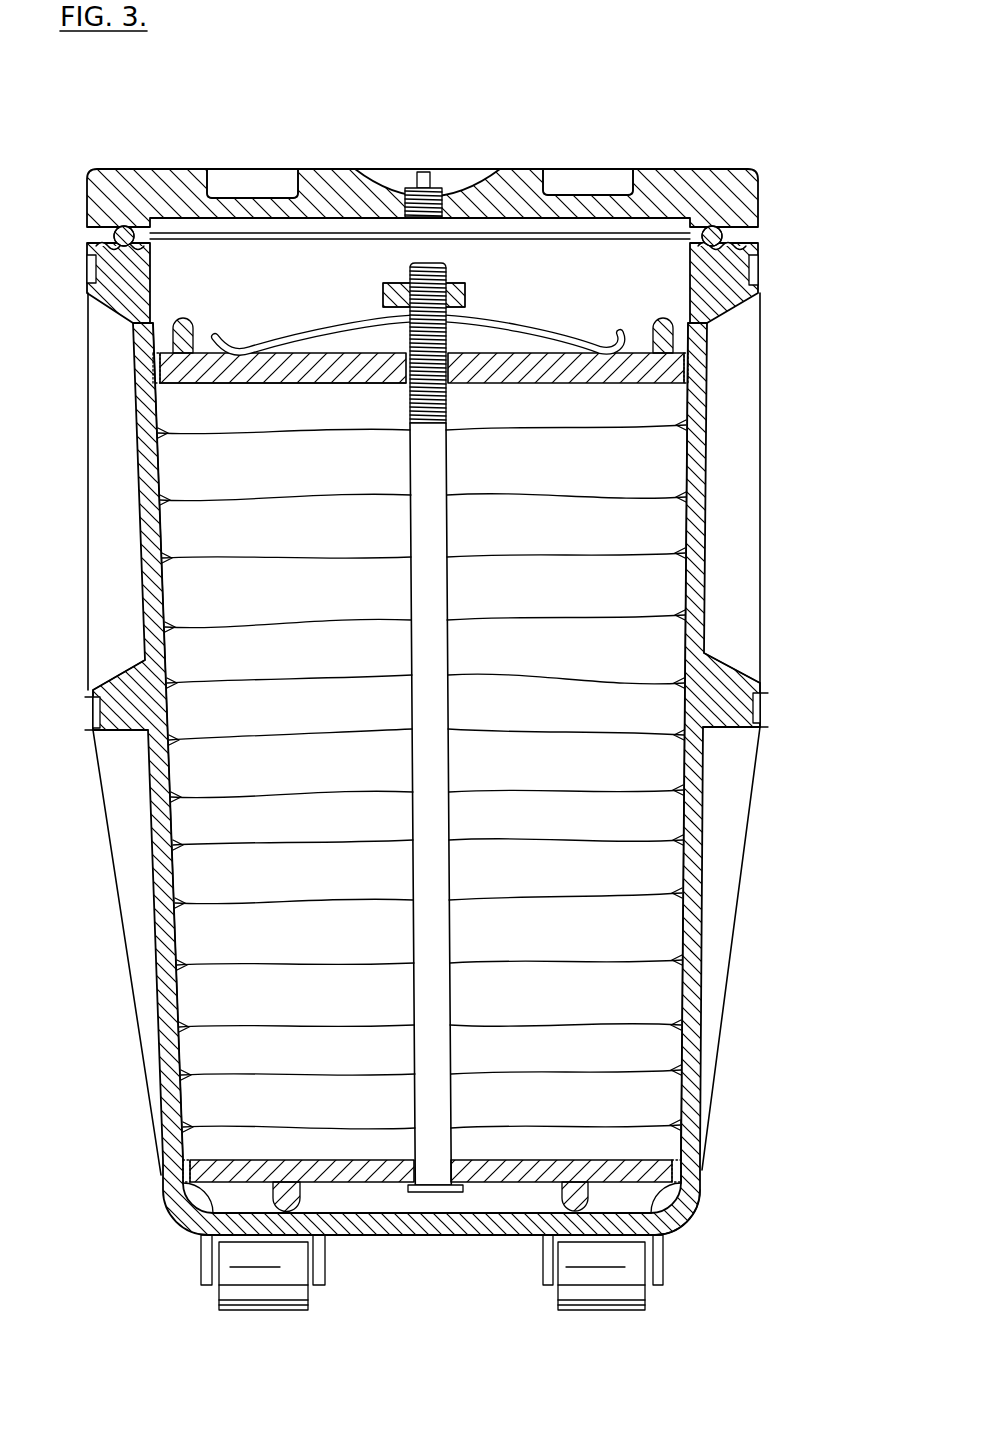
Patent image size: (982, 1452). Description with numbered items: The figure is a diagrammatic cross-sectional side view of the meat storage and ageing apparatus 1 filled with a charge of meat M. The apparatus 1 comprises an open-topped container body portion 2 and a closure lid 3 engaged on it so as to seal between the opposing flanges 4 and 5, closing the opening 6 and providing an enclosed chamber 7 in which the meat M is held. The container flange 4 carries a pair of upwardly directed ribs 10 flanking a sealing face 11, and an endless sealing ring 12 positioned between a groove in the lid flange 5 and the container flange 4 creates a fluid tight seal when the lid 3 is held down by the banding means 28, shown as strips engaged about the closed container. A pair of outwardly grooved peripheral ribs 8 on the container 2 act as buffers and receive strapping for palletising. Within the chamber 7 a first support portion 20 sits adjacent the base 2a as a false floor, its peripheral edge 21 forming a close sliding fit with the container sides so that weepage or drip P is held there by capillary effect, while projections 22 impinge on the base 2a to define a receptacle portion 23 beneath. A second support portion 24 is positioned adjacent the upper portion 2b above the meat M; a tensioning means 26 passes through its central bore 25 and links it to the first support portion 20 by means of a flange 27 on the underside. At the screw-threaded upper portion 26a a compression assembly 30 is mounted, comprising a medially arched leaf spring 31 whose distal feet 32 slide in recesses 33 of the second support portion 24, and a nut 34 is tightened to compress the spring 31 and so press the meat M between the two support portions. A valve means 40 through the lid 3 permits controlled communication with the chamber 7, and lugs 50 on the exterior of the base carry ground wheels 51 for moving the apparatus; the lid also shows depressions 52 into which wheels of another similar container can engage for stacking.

The apparatus 1 is at (775, 162).
The container body portion 2 is at (700, 625).
The base 2a is at (423, 1210).
The upper portion 2b is at (680, 527).
The closure lid 3 is at (312, 170).
The flange 4 is at (745, 297).
The flange 5 is at (760, 203).
The opening 6 is at (645, 275).
The chamber 7 is at (655, 925).
The peripheral ribs 8 is at (110, 300).
The upwardly directed ribs 10 is at (88, 268).
The sealing face 11 is at (98, 242).
The endless sealing ring 12 is at (118, 226).
The first support portion 20 is at (660, 1148).
The peripheral edge 21 is at (670, 1186).
The projections 22 is at (662, 1230).
The receptacle portion 23 is at (337, 1197).
The second support portion 24 is at (650, 380).
The central bore 25 is at (405, 385).
The tensioning means 26 is at (418, 610).
The upper portion 26a is at (430, 435).
The flange 27 is at (448, 1190).
The banding means 28 is at (722, 975).
The compression assembly 30 is at (462, 283).
The leaf spring 31 is at (500, 332).
The distal feet 32 is at (228, 346).
The recesses 33 is at (265, 366).
The nut 34 is at (385, 290).
The valve means 40 is at (440, 188).
The lugs 50 is at (201, 1262).
The ground wheels 51 is at (225, 1292).
The recess in cap 52 is at (590, 172).
The weepage or drip P is at (682, 370).
The meat M is at (530, 609).